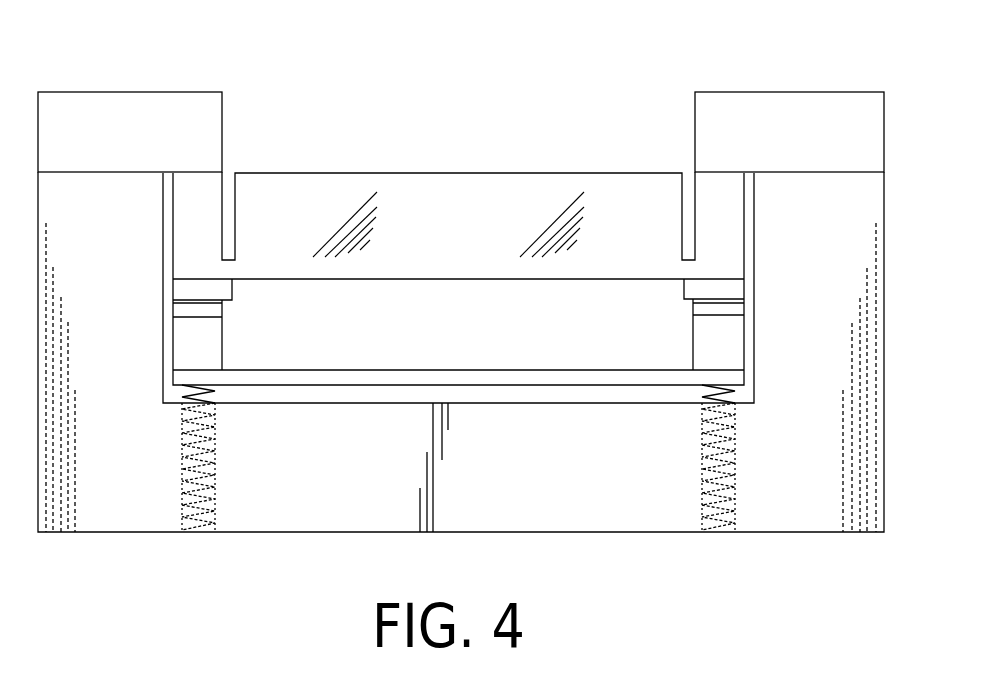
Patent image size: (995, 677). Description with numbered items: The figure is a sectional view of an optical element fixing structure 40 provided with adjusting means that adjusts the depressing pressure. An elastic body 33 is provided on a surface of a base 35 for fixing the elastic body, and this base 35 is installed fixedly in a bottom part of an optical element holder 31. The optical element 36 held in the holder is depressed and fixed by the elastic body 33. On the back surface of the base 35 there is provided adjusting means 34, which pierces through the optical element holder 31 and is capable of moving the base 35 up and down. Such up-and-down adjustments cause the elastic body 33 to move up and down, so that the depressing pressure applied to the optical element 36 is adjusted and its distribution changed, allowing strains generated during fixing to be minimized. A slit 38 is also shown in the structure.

The optical element fixing structure 40 is at (148, 55).
The optical element holder 31 is at (298, 502).
The elastic body 33 is at (203, 343).
The adjusting means 34 is at (703, 394).
The base for fixing the elastic body 35 is at (308, 378).
The optical element 36 is at (348, 172).
The slit 38 is at (688, 173).